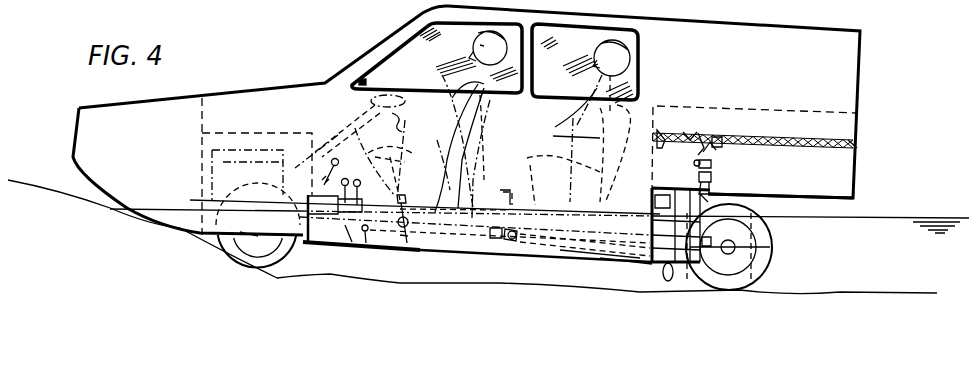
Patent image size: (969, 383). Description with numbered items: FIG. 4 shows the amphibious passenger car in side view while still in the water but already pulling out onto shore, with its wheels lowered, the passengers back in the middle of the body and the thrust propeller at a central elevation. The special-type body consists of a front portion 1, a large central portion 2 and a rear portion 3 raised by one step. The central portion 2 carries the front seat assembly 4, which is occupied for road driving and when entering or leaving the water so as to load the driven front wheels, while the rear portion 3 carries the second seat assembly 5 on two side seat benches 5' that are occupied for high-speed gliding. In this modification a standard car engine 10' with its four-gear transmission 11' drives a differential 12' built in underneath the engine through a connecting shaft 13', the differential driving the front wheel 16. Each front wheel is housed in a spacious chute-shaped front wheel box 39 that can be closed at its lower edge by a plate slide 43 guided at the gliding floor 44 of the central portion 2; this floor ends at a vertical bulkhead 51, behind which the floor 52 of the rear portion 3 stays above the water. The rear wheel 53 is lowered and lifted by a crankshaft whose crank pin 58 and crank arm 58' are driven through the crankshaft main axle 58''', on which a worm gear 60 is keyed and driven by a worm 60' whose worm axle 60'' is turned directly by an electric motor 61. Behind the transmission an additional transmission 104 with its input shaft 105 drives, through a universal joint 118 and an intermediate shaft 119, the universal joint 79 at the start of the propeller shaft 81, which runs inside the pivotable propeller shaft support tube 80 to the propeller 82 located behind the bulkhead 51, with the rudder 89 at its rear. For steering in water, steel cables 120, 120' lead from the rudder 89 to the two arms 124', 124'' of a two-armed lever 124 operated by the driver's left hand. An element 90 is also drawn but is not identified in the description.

The front portion 1 is at (97, 152).
The central portion 2 is at (250, 123).
The rear portion 3 is at (822, 50).
The front seat assembly 4 is at (430, 193).
The second seat assembly 5 is at (753, 110).
The side seat bench 5' is at (860, 159).
The car engine 10' is at (171, 172).
The four-gear transmission 11' is at (334, 260).
The differential 12' is at (166, 258).
The connecting shaft 13' is at (258, 257).
The front wheel 16 is at (233, 257).
The front wheel box 39 is at (297, 147).
The plate slide 43 is at (380, 247).
The gliding floor 44 is at (602, 250).
The bulkhead 51 is at (625, 250).
The floor 52 is at (837, 200).
The rear wheel 53 is at (757, 272).
The crank pin 58 is at (734, 183).
The crank arm 58' is at (752, 165).
The crankshaft main axle 58''' is at (746, 109).
The worm gear 60 is at (726, 102).
The worm 60' is at (721, 91).
The worm axle 60'' is at (690, 86).
The electric motor 61 is at (668, 133).
The universal joint 79 is at (487, 240).
The propeller shaft support tube 80 is at (537, 243).
The propeller shaft 81 is at (557, 243).
The propeller 82 is at (663, 270).
The rudder 89 is at (707, 280).
The rear bracket 90 is at (651, 203).
The additional transmission 104 is at (350, 232).
The input shaft 105 is at (352, 218).
The universal joint 118 is at (367, 237).
The intermediate shaft 119 is at (530, 158).
The steel cable 120 is at (439, 154).
The steel cable 120' is at (486, 141).
The two-armed lever 124 is at (350, 155).
The arm 124' is at (410, 112).
The arm 124'' is at (440, 264).